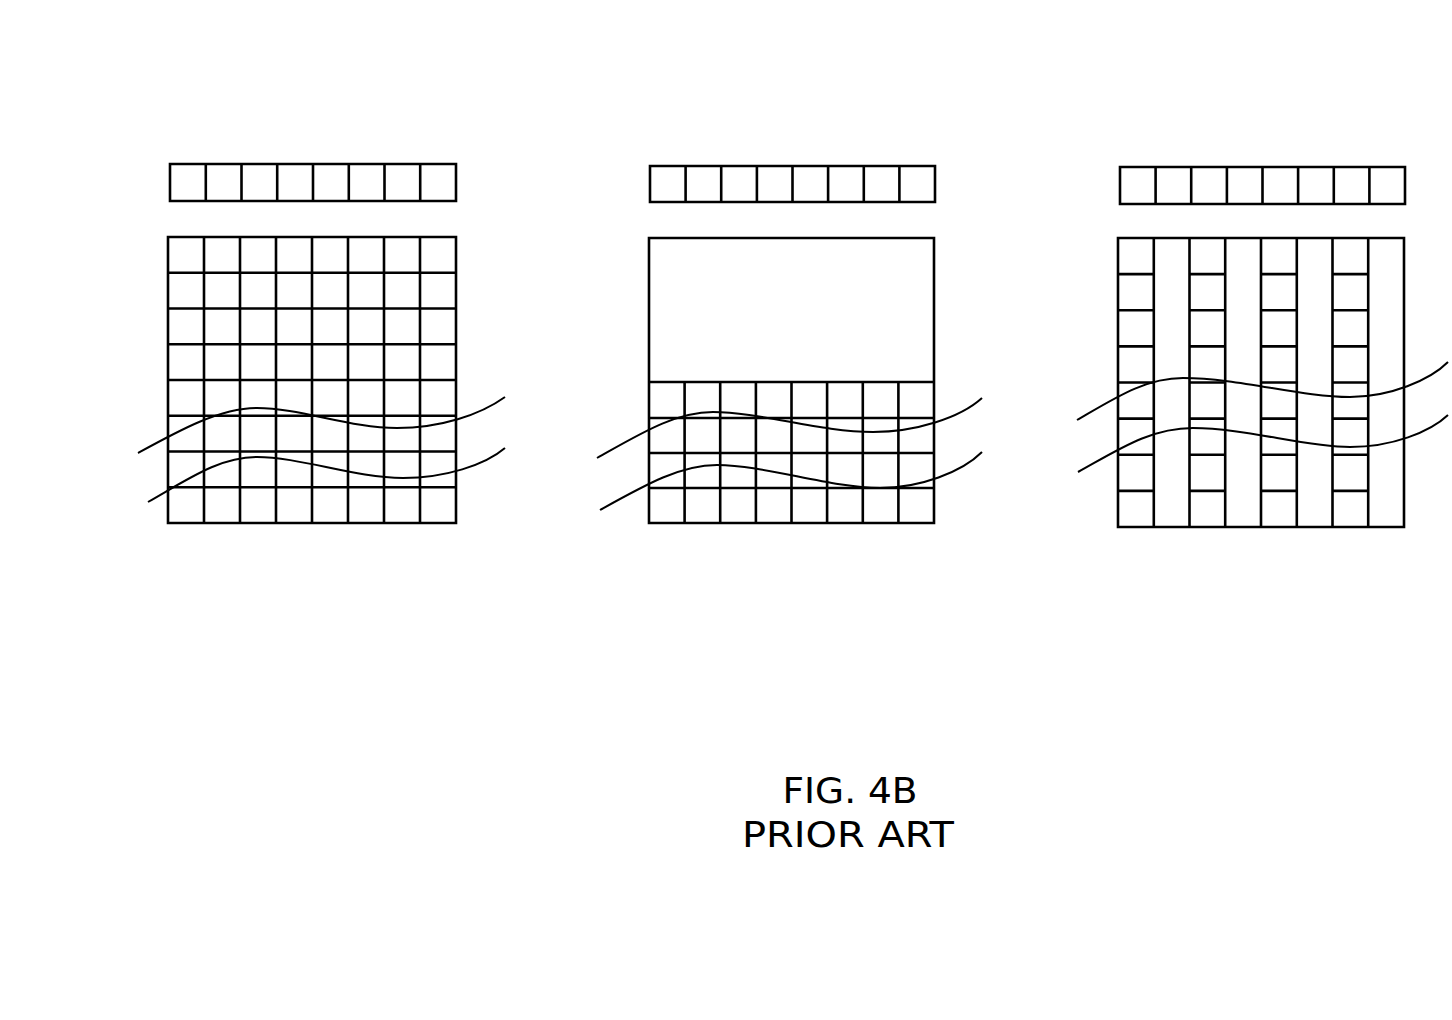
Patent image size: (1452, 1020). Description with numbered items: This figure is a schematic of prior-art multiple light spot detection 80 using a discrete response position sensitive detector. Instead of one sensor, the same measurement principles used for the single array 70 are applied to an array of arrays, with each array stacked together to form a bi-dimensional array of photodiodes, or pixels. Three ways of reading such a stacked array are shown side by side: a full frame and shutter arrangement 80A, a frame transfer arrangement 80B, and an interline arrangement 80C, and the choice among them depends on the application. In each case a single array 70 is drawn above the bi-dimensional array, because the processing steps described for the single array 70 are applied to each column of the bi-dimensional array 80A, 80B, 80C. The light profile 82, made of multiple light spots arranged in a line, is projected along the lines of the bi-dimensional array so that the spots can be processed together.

The single array 70 is at (191, 136).
The multiple light spot detection 80 is at (809, 545).
The full frame and shutter arrangement 80A is at (458, 558).
The frame transfer arrangement 80B is at (899, 555).
The interline arrangement 80C is at (1359, 562).
The light profile 82 is at (507, 429).